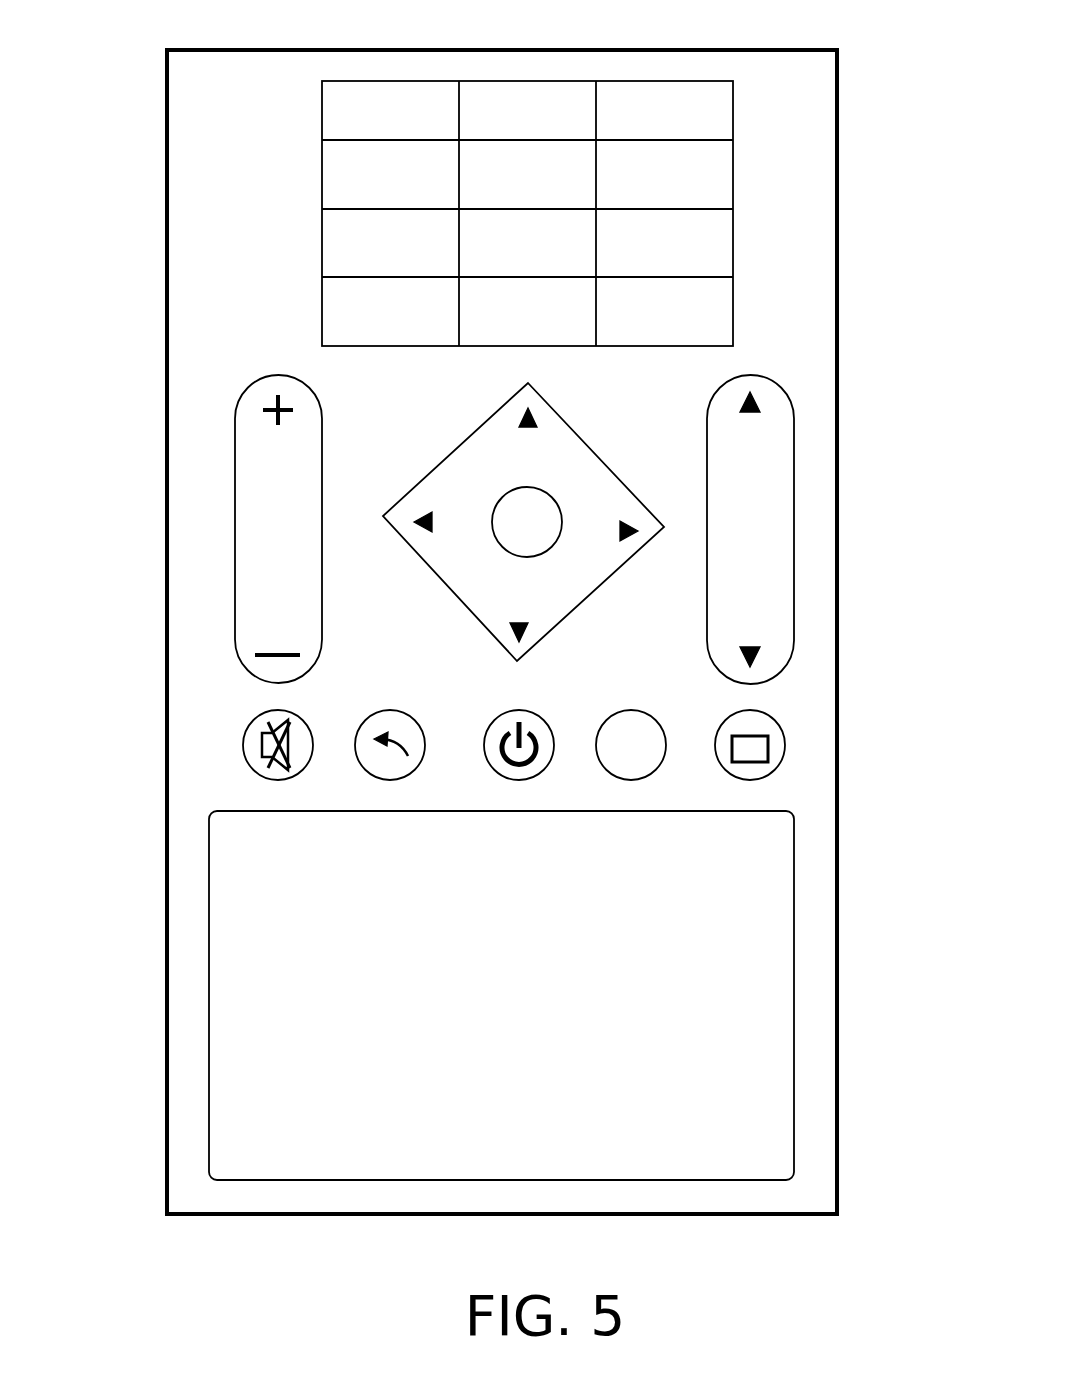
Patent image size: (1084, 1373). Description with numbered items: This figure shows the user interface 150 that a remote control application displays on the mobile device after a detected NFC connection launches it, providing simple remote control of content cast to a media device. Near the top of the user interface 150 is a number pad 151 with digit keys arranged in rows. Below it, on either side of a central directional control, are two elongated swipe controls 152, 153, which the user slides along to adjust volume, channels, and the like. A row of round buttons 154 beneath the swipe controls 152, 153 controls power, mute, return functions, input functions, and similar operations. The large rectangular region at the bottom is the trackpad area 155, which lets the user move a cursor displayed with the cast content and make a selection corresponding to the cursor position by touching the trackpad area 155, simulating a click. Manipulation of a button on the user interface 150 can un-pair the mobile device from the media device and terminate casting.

The user interface 150 is at (219, 253).
The number pad 151 is at (322, 98).
The swipe control 152 is at (235, 446).
The swipe control 153 is at (837, 440).
The buttons 154 is at (200, 745).
The trackpad area 155 is at (209, 995).